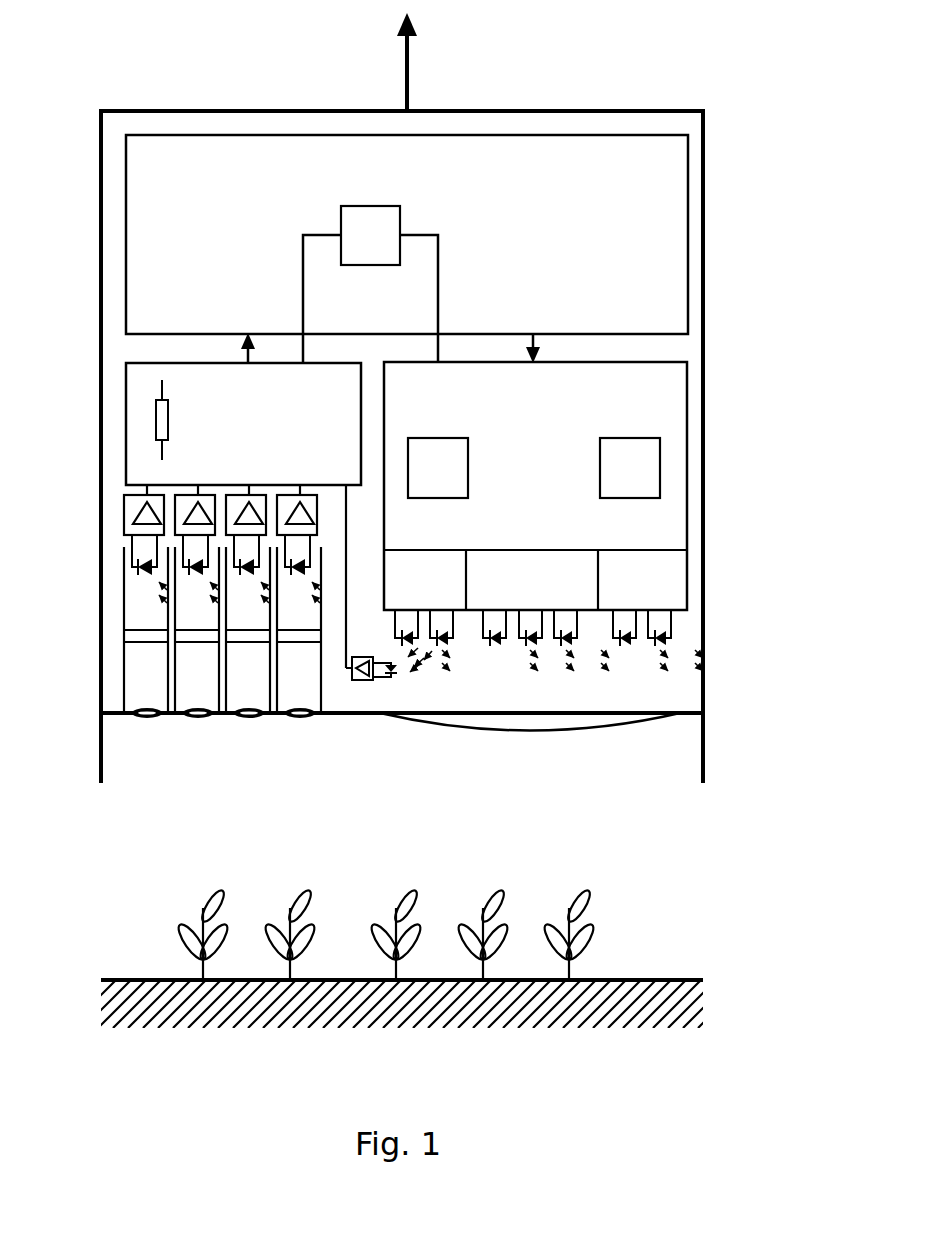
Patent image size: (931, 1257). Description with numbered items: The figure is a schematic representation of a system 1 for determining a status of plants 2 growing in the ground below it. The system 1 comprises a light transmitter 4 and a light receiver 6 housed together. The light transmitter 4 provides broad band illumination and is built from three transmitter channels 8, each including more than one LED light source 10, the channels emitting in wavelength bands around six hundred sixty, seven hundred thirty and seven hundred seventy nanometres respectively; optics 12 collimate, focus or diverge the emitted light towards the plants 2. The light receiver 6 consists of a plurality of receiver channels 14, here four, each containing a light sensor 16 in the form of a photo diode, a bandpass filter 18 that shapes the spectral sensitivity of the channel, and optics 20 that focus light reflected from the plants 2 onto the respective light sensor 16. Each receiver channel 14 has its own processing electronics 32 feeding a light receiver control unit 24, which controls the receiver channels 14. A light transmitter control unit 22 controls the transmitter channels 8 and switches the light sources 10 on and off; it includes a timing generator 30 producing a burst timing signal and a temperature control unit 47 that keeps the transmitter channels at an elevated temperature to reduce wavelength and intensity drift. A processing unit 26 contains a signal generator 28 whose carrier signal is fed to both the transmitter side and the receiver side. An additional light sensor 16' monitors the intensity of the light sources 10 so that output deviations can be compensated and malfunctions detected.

The system 1 is at (764, 345).
The plants 2 is at (172, 902).
The light transmitter 4 is at (582, 750).
The light receiver 6 is at (220, 748).
The transmitter channel 8 is at (400, 604).
The light source 10 is at (672, 633).
The optics 12 is at (535, 731).
The receiver channel 14 is at (125, 677).
The light sensor 16 is at (182, 569).
The additional light sensor 16' is at (387, 729).
The bandpass filter 18 is at (140, 637).
The optics 20 is at (147, 722).
The light transmitter control unit 22 is at (519, 481).
The light receiver control unit 24 is at (233, 438).
The processing unit 26 is at (519, 249).
The signal generator 28 is at (357, 249).
The timing generator 30 is at (425, 481).
The processing electronics 32 is at (127, 508).
The temperature control unit 47 is at (617, 481).